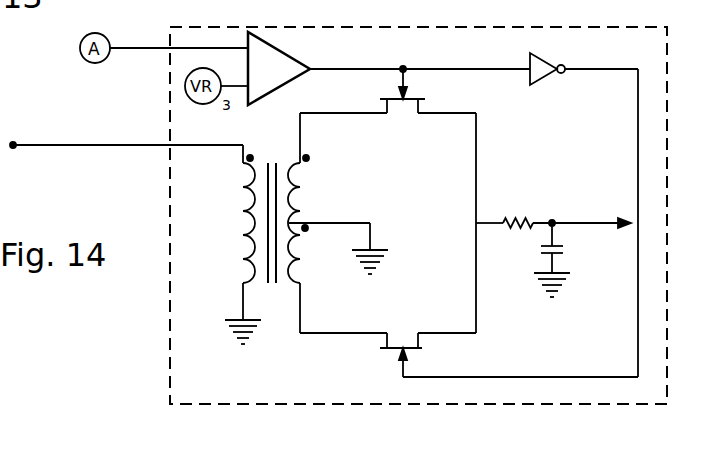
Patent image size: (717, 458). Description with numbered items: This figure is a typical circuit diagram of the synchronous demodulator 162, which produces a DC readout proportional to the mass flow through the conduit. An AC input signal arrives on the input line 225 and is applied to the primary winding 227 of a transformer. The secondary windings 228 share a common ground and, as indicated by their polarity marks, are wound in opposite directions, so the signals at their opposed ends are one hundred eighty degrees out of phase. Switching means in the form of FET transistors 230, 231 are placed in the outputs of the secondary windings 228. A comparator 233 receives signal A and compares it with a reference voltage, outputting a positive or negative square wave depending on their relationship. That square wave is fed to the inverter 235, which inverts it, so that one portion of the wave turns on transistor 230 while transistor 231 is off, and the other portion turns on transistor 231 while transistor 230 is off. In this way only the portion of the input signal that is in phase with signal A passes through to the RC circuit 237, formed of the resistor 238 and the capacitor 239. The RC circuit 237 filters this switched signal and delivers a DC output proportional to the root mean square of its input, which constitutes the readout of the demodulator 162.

The synchronous demodulator 162 is at (573, 19).
The input line 225 is at (83, 146).
The primary winding 227 is at (240, 200).
The secondary windings 228 is at (288, 201).
The FET transistor 230 is at (417, 109).
The FET transistor 231 is at (405, 343).
The comparator 233 is at (299, 57).
The inverter 235 is at (551, 63).
The RC circuit 237 is at (527, 262).
The resistor 238 is at (521, 217).
The capacitor 239 is at (559, 255).